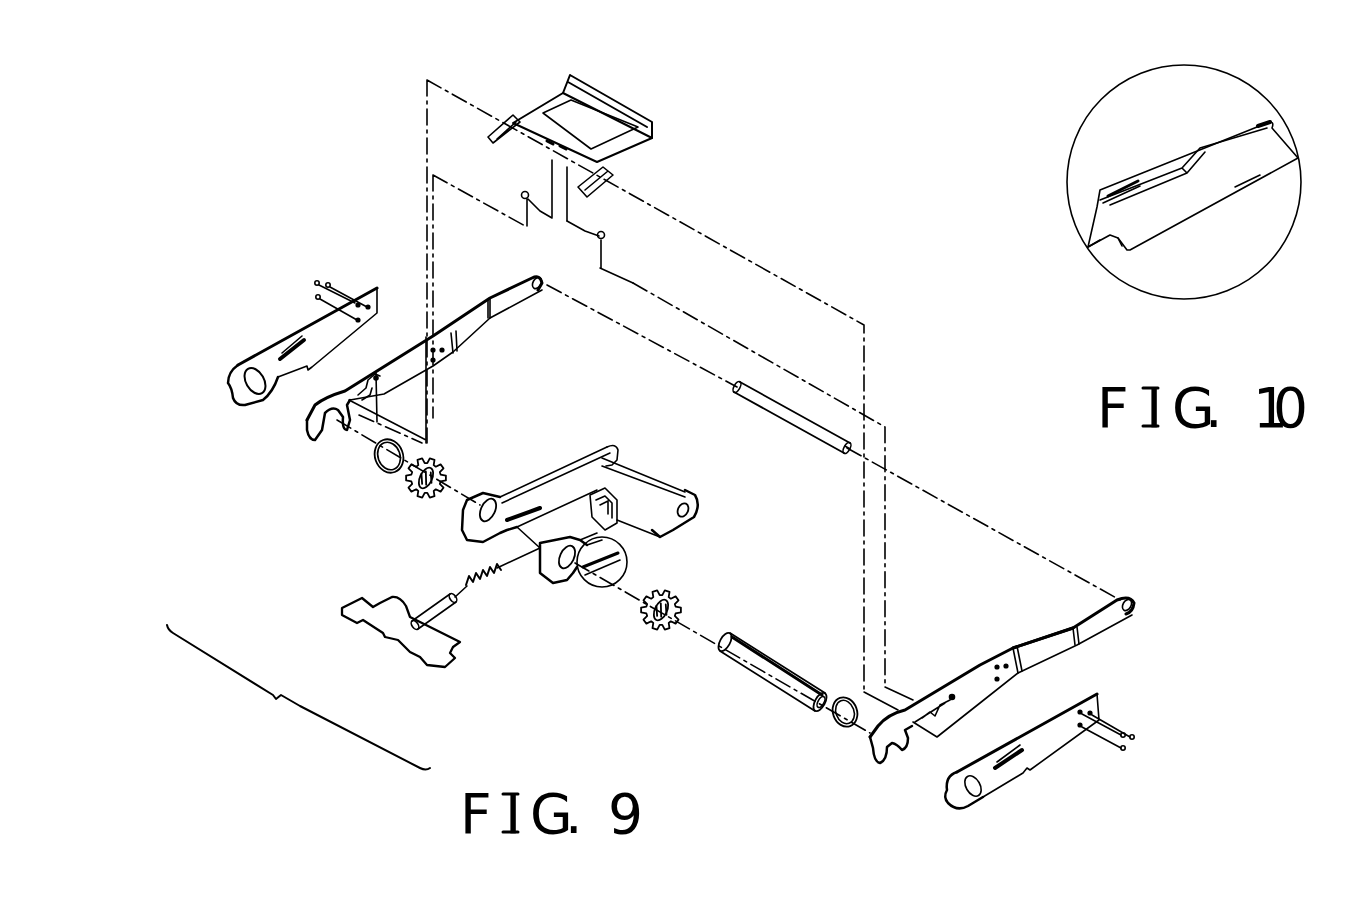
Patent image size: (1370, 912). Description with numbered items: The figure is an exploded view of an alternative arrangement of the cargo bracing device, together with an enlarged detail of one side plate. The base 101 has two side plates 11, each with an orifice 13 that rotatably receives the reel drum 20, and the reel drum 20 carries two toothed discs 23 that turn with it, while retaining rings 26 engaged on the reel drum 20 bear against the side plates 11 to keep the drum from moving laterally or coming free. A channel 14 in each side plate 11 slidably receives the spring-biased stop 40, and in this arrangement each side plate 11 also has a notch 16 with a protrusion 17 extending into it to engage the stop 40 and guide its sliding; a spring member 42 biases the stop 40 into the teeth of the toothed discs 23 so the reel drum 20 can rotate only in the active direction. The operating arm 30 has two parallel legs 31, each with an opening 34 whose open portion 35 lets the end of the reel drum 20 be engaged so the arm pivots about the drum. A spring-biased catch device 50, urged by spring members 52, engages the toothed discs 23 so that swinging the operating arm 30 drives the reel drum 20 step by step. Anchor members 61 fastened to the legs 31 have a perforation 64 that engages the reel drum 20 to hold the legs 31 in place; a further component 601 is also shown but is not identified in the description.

In FIG. 9, the side plates 11 is at (567, 480).
In FIG. 10, the side plates 11 is at (1172, 213).
In FIG. 9, the orifice 13 is at (490, 500).
In FIG. 10, the channel 14 is at (1268, 135).
In FIG. 10, the notch 16 is at (1178, 155).
In FIG. 10, the protrusion 17 is at (1137, 178).
In FIG. 9, the reel drum 20 is at (765, 673).
In FIG. 9, the toothed discs 23 is at (648, 628).
In FIG. 9, the retaining rings 26 is at (836, 726).
In FIG. 9, the operating arm 30 is at (1092, 630).
In FIG. 9, the legs 31 is at (1055, 637).
In FIG. 9, the opening 34 is at (329, 430).
In FIG. 9, the open portion 35 is at (893, 753).
In FIG. 9, the spring-biased stop 40 is at (373, 618).
In FIG. 9, the spring member 42 is at (488, 590).
In FIG. 9, the spring-biased catch device 50 is at (532, 130).
In FIG. 9, the spring members 52 is at (533, 202).
In FIG. 9, the anchor members 61 is at (1047, 752).
In FIG. 9, the perforation 64 is at (972, 786).
In FIG. 9, the base 101 is at (701, 519).
In FIG. 10, the base 101 is at (1247, 186).
In FIG. 9, the left mounting plate 601 is at (230, 367).